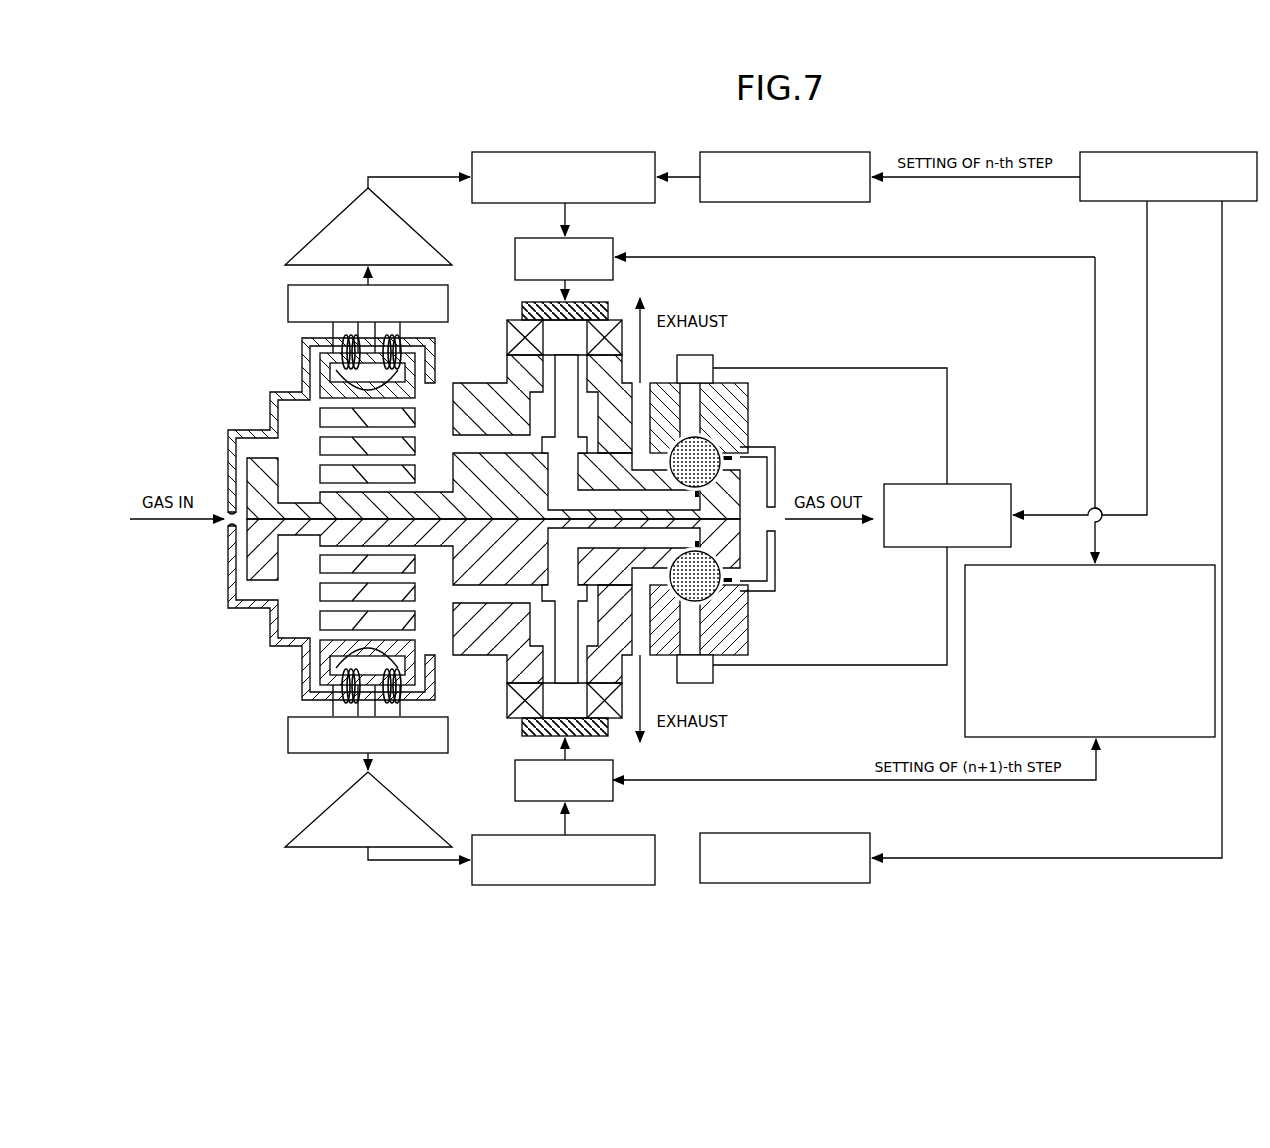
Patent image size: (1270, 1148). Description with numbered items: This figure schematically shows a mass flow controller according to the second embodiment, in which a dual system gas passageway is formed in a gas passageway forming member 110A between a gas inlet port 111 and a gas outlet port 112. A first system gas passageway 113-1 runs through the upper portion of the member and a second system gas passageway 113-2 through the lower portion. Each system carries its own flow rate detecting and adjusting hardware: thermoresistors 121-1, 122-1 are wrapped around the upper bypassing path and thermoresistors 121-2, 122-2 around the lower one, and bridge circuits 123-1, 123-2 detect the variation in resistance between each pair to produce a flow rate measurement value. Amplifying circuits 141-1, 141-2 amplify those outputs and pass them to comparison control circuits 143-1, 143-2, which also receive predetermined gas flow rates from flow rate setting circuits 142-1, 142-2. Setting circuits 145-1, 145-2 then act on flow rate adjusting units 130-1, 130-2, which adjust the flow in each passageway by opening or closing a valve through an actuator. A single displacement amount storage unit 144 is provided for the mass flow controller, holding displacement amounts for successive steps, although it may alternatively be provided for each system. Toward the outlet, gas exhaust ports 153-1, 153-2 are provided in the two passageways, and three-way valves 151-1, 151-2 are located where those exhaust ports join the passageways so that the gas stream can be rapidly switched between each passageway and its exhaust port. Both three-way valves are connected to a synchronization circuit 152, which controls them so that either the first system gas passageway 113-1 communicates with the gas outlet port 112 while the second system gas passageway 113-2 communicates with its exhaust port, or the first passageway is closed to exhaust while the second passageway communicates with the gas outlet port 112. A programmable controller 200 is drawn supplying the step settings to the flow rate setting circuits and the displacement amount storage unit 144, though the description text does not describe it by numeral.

The gas passageway forming member 110A is at (228, 578).
The gas inlet port 111 is at (228, 505).
The gas outlet port 112 is at (780, 530).
The first system gas passageway 113-1 is at (302, 438).
The second system gas passageway 113-2 is at (302, 600).
The thermoresistor 121-1 is at (336, 376).
The thermoresistor 121-2 is at (336, 662).
The thermoresistor 122-1 is at (340, 383).
The thermoresistor 122-2 is at (340, 655).
The bridge circuit 123-1 is at (288, 308).
The bridge circuit 123-2 is at (288, 739).
The flow rate adjusting unit 130-1 is at (612, 300).
The flow rate adjusting unit 130-2 is at (612, 738).
The amplifying circuit 141-1 is at (340, 214).
The amplifying circuit 141-2 is at (340, 799).
The flow rate setting circuit 142-1 is at (808, 151).
The flow rate setting circuit 142-2 is at (808, 832).
The comparison control circuit 143-1 is at (576, 151).
The comparison control circuit 143-2 is at (576, 833).
The displacement amount storage unit 144 is at (1151, 564).
The setting circuit 145-1 is at (581, 236).
The setting circuit 145-2 is at (515, 784).
The three-way valve 151-1 is at (720, 452).
The three-way valve 151-2 is at (720, 590).
The synchronization circuit 152 is at (967, 483).
The gas exhaust port 153-1 is at (648, 383).
The gas exhaust port 153-2 is at (648, 655).
The programmable controller 200 is at (1213, 151).